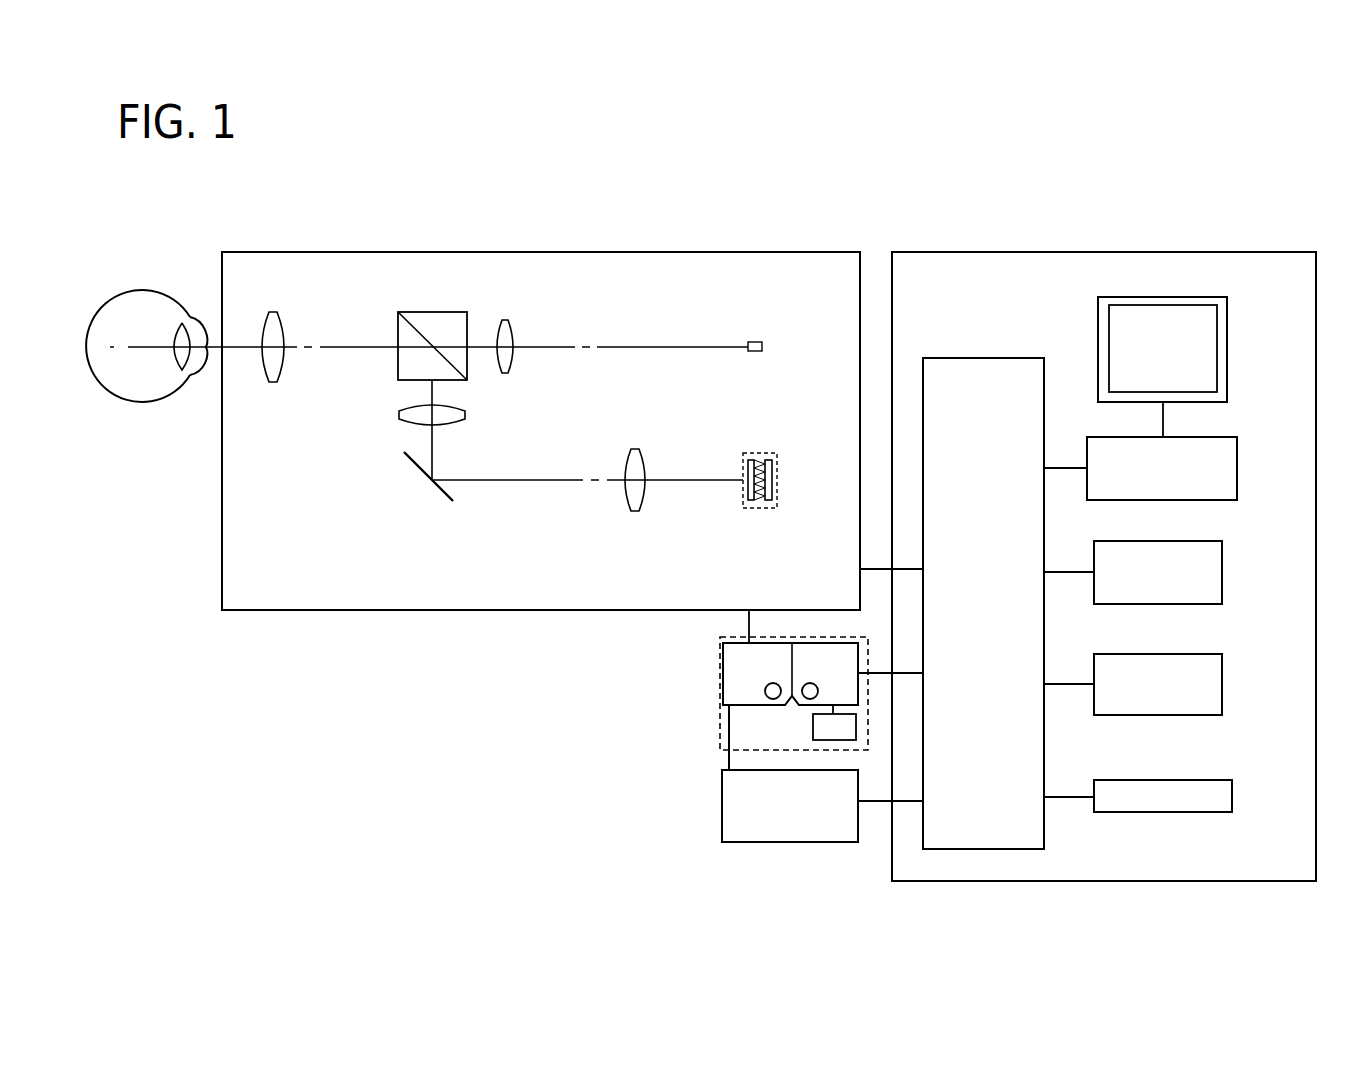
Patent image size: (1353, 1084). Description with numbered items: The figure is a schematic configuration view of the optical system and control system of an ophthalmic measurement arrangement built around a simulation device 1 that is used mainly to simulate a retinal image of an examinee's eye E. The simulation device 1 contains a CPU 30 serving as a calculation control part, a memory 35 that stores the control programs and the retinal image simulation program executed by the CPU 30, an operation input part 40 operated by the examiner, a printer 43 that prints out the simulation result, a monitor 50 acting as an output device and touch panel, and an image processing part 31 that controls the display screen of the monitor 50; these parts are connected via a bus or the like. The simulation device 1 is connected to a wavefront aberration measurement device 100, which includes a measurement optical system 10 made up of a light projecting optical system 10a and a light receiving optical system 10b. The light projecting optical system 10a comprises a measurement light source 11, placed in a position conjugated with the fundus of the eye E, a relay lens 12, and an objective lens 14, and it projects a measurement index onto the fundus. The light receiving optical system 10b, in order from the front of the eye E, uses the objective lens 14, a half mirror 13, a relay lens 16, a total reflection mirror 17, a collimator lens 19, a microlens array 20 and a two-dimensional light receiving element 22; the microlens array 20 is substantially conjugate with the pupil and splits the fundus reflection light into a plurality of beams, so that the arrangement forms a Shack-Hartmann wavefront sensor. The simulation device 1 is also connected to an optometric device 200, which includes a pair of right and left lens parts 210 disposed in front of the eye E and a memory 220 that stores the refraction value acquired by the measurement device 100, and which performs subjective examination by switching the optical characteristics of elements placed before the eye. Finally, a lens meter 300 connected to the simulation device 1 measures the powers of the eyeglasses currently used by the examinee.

The simulation device 1 is at (1113, 252).
The measurement optical system 10 is at (754, 292).
The light projecting optical system 10a is at (542, 301).
The light receiving optical system 10b is at (326, 503).
The measurement light source 11 is at (756, 352).
The relay lens 12 is at (505, 320).
The half mirror 13 is at (392, 345).
The objective lens 14 is at (272, 322).
The relay lens 16 is at (398, 417).
The total reflection mirror 17 is at (427, 478).
The collimator lens 19 is at (640, 449).
The microlens array 20 is at (767, 525).
The two-dimensional light receiving element 22 is at (767, 510).
The CPU 30 is at (942, 356).
The image processing part 31 is at (1233, 437).
The memory 35 is at (1224, 571).
The operation input part 40 is at (1224, 682).
The printer 43 is at (1222, 804).
The monitor 50 is at (1098, 342).
The wavefront aberration measurement device 100 is at (735, 252).
The optometric device 200 is at (751, 693).
The lens parts 210 is at (781, 677).
The memory 220 is at (825, 727).
The lens meter 300 is at (720, 799).
The examinee's eye E is at (140, 398).